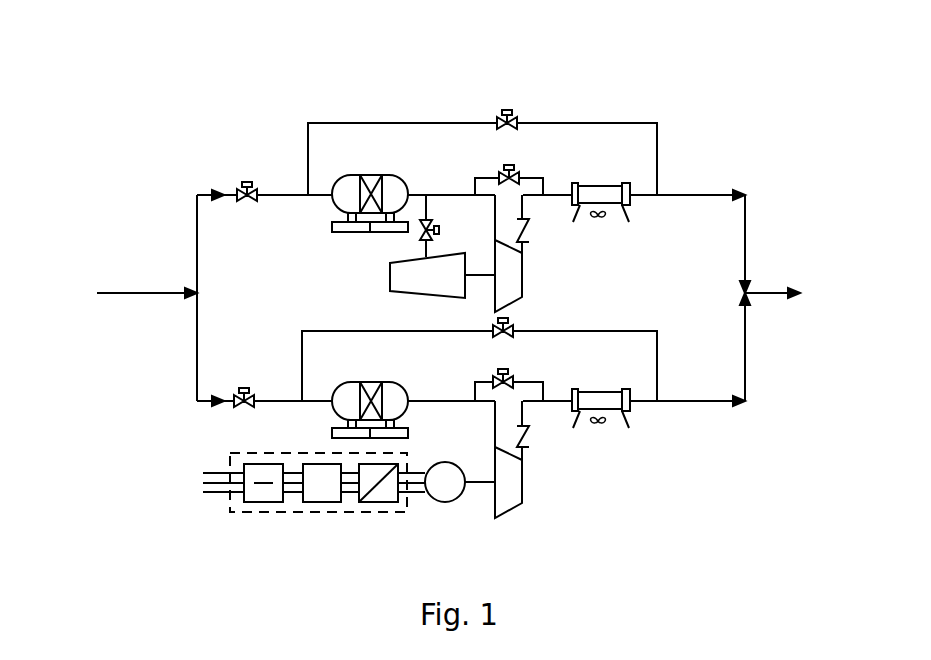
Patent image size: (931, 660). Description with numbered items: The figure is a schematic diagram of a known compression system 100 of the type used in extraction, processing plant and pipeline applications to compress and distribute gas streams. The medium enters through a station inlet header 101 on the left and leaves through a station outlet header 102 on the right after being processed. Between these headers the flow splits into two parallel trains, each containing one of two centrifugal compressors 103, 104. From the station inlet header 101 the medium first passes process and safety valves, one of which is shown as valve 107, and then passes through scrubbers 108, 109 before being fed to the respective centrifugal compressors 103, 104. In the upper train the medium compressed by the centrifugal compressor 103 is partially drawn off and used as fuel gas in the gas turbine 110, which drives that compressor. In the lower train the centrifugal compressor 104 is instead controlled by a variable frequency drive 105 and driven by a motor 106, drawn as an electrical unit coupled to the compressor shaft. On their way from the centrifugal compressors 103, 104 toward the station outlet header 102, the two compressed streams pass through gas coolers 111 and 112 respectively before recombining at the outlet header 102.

The compression system 100 is at (776, 70).
The station inlet header 101 is at (140, 292).
The station outlet header 102 is at (786, 293).
The centrifugal compressor 103 is at (513, 283).
The centrifugal compressor 104 is at (523, 483).
The variable frequency drive 105 is at (315, 512).
The motor 106 is at (443, 502).
The process and safety valve 107 is at (245, 188).
The scrubber 108 is at (333, 212).
The scrubber 109 is at (330, 392).
The gas turbine 110 is at (400, 277).
The gas cooler 111 is at (612, 190).
The gas cooler 112 is at (608, 398).